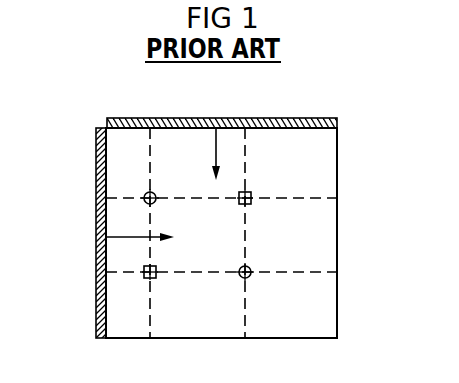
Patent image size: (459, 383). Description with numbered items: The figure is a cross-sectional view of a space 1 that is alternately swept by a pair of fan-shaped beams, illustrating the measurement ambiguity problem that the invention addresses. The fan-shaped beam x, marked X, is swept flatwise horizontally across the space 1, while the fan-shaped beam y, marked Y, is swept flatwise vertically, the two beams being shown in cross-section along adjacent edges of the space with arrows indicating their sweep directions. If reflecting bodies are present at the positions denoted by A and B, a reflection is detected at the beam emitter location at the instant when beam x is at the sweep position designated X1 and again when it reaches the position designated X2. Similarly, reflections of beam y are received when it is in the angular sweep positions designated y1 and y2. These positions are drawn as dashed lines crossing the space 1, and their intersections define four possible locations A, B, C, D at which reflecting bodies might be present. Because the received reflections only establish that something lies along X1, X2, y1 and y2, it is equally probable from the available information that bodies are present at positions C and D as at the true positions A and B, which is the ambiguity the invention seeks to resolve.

The space 1 is at (320, 164).
The fan-shaped beam x X is at (97, 172).
The fan-shaped beam y Y is at (137, 125).
The first sweep position of beam x X1 is at (152, 249).
The second sweep position of beam x X2 is at (249, 249).
The first angular sweep position of beam y y1 is at (241, 196).
The second angular sweep position of beam y y2 is at (241, 270).
The position A is at (142, 282).
The position B is at (252, 189).
The position C is at (144, 190).
The position D is at (252, 281).